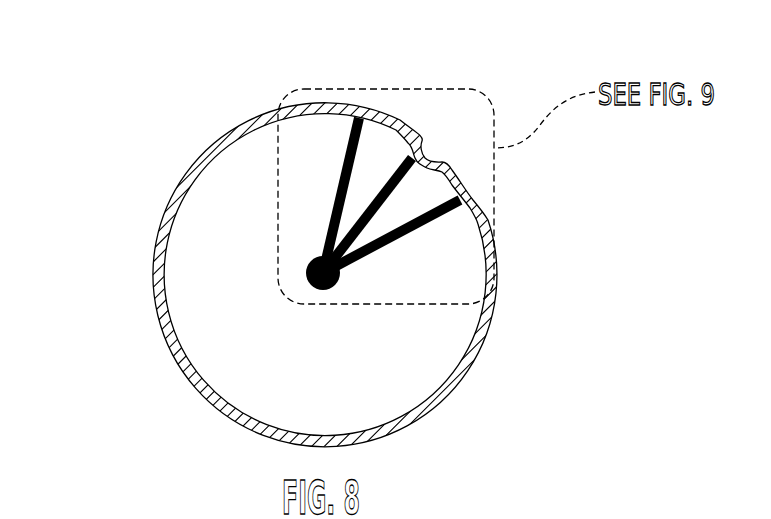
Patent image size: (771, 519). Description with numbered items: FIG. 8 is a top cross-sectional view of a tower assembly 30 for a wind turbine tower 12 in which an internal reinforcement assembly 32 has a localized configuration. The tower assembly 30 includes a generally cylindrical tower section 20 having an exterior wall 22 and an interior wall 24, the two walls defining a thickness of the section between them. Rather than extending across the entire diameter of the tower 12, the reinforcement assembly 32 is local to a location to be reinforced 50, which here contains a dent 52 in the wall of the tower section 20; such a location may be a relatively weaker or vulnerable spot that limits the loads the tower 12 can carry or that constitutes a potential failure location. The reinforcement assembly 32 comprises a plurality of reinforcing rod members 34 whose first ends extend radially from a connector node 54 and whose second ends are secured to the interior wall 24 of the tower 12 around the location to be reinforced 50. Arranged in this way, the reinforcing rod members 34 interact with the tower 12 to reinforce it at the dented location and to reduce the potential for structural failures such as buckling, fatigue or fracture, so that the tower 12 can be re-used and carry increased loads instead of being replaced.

The wind turbine tower 12 is at (385, 235).
The tower section 20 is at (463, 374).
The exterior wall 22 is at (160, 323).
The interior wall 24 is at (193, 358).
The tower assembly 30 is at (385, 278).
The reinforcement assembly 32 is at (309, 62).
The reinforcing rod members 34 is at (416, 206).
The location to be reinforced 50 is at (438, 138).
The dent 52 is at (450, 162).
The connector node 54 is at (322, 291).